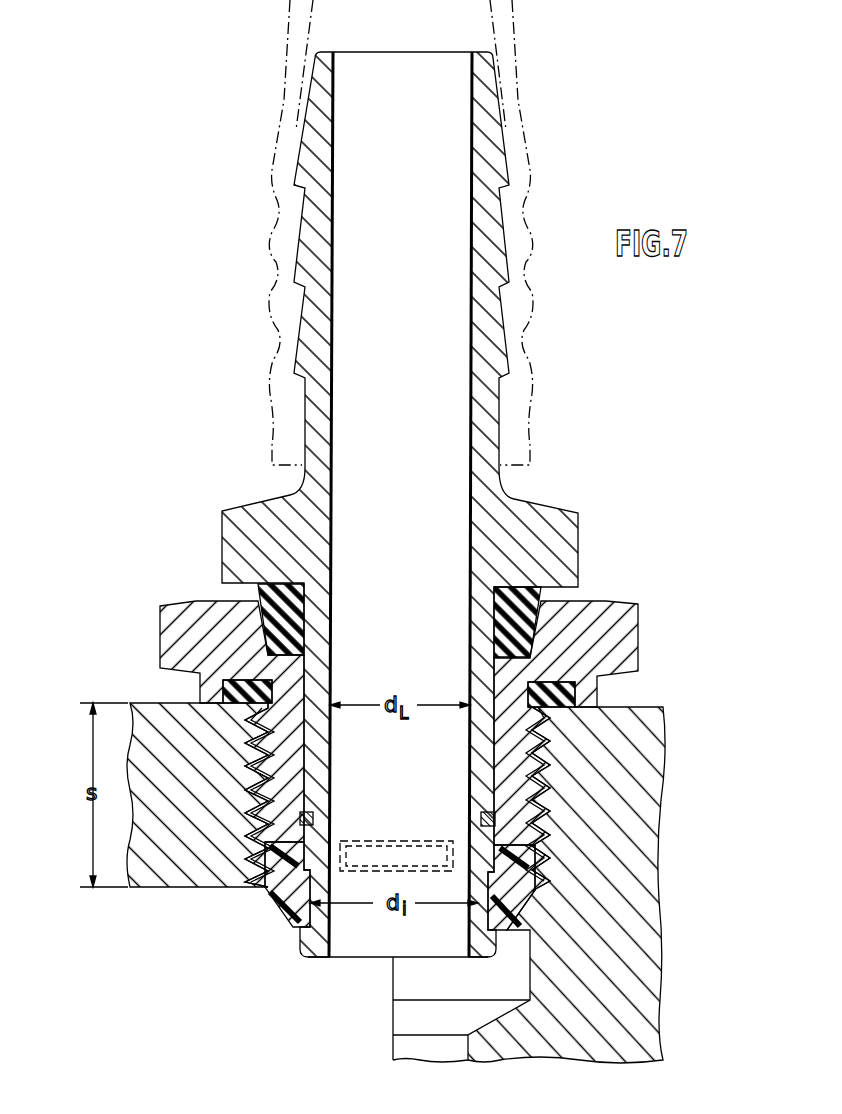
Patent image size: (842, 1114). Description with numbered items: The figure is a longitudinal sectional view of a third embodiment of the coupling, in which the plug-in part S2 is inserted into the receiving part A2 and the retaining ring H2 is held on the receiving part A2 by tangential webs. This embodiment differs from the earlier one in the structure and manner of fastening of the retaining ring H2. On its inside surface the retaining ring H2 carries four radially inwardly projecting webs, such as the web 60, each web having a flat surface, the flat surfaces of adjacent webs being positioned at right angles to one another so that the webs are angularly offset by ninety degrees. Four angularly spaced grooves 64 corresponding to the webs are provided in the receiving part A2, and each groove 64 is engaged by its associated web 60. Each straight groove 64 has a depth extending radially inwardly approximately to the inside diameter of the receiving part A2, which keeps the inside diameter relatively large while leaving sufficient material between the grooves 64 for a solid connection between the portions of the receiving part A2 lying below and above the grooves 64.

The plug-in part S2 is at (548, 476).
The receiving part A2 is at (613, 586).
The retaining ring H2 is at (258, 921).
The groove 64 is at (532, 863).
The web 60 is at (421, 850).